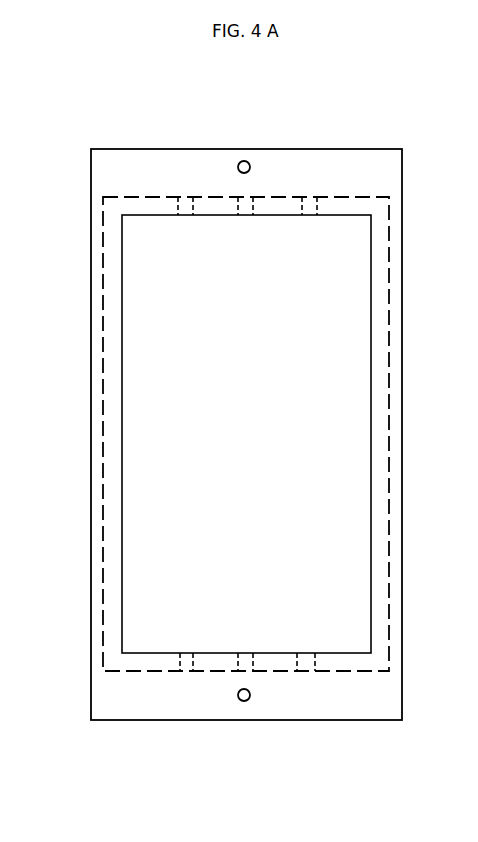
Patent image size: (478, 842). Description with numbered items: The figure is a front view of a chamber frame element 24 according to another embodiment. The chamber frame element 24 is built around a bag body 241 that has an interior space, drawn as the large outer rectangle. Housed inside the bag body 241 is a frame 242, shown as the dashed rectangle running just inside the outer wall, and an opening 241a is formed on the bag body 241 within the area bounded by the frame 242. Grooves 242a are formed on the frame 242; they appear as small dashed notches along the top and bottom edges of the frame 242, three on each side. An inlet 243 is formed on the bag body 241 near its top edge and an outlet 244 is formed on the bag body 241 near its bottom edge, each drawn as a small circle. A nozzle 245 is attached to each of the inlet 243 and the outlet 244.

The chamber frame element 24 is at (413, 157).
The bag body 241 is at (205, 180).
The opening 241a is at (220, 490).
The frame 242 is at (108, 378).
The grooves 242a is at (307, 205).
The inlet 243 is at (251, 159).
The outlet 244 is at (250, 700).
The nozzle 245 is at (251, 167).